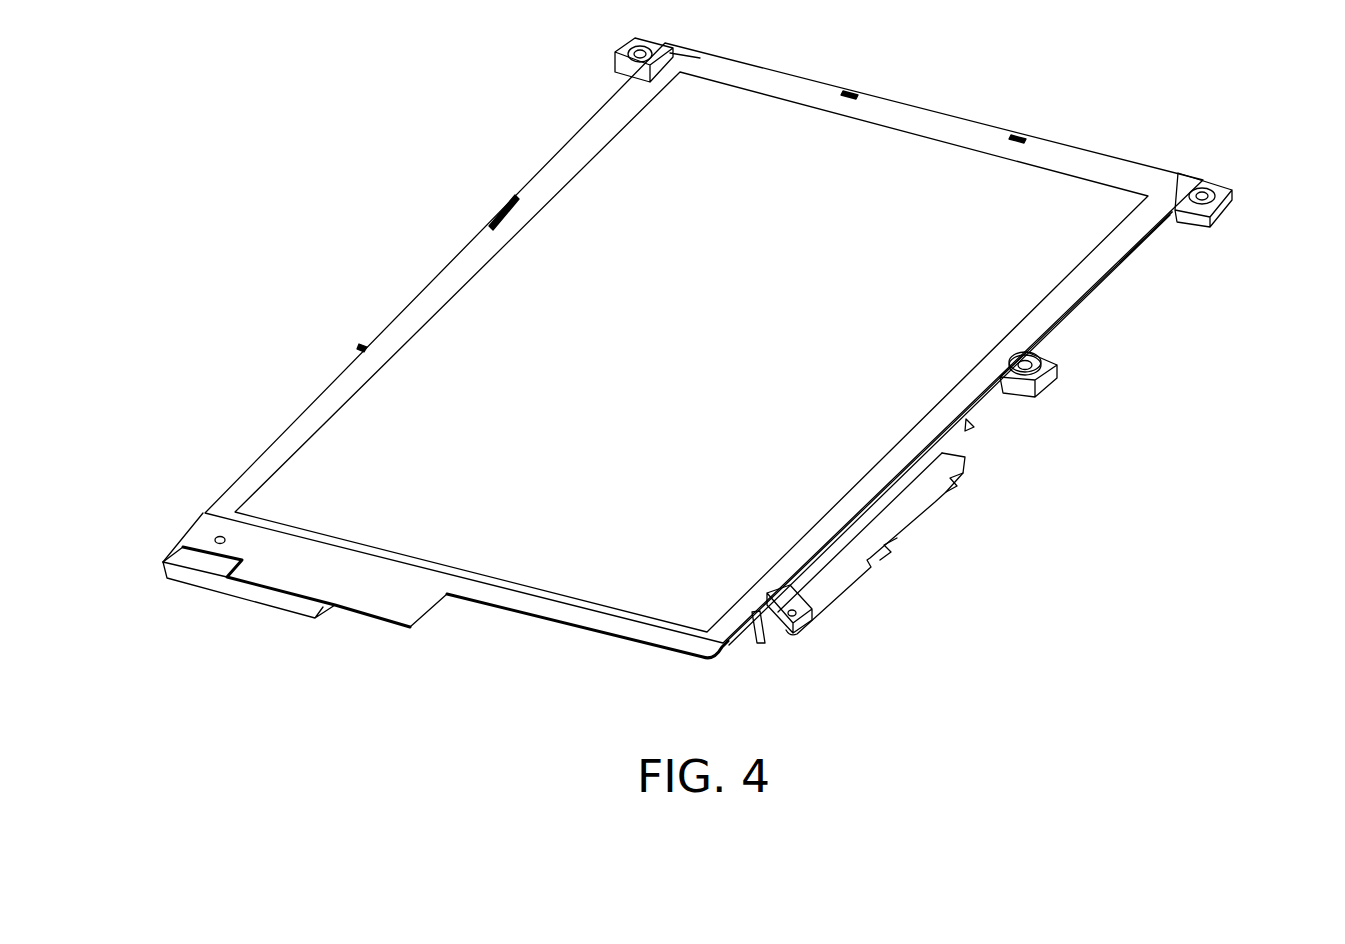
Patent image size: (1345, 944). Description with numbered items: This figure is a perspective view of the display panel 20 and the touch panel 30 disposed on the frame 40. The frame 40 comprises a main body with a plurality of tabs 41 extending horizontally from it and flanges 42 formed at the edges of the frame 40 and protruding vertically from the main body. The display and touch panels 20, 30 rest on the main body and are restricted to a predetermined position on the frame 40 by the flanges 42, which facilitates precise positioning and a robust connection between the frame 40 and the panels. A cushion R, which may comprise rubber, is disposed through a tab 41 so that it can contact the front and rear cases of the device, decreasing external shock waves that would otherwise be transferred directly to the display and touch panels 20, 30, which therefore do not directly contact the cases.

The display panel 20 is at (665, 550).
The touch panel 30 is at (400, 590).
The frame 40 is at (168, 545).
The tab 41 is at (618, 69).
The flange 42 is at (503, 208).
The cushion R is at (1045, 354).